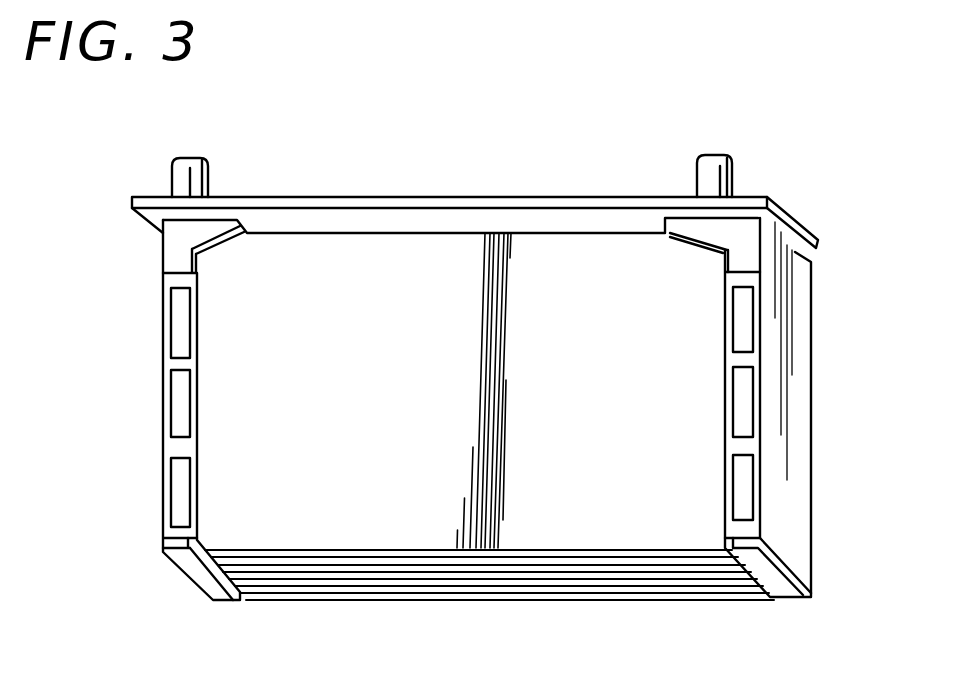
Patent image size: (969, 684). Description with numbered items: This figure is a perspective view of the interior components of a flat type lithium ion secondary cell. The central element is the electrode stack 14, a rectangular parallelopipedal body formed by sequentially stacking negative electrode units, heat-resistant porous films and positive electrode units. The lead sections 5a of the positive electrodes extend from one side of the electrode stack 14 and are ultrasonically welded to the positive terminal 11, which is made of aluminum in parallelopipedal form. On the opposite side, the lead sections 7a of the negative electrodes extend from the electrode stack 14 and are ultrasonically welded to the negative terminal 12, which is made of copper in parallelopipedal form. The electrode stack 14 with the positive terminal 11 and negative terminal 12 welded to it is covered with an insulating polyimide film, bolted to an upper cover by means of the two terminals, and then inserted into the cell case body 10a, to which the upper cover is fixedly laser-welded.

The cell case body 10a is at (458, 197).
The negative terminal 12 is at (208, 160).
The positive terminal 11 is at (728, 168).
The lead sections of the negative electrodes 7a is at (172, 365).
The lead sections of the positive electrodes 5a is at (745, 360).
The electrode stack 14 is at (622, 531).